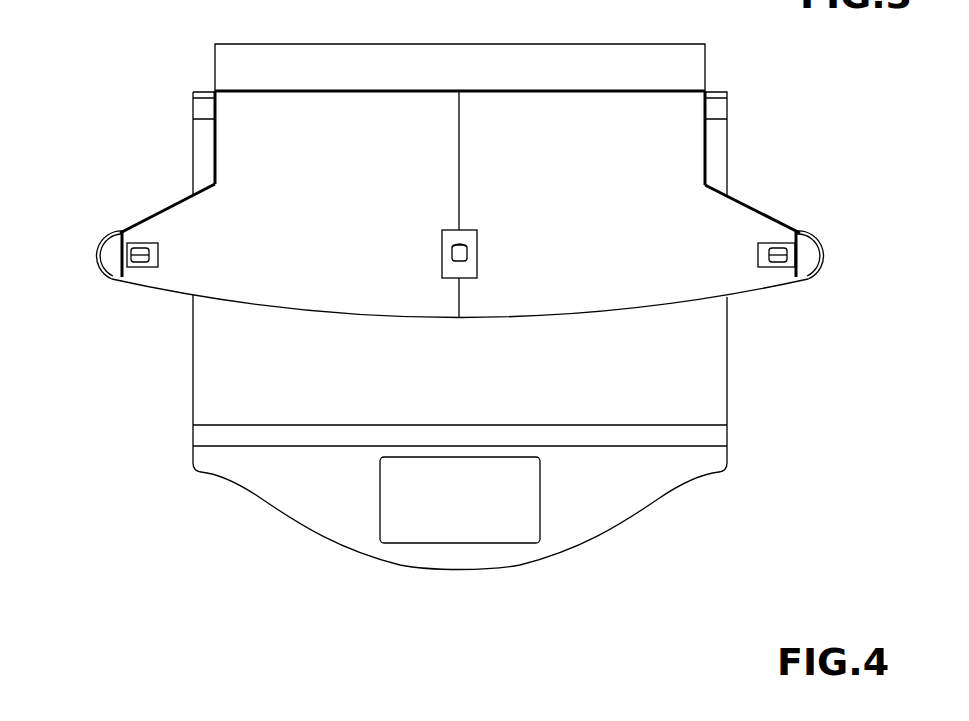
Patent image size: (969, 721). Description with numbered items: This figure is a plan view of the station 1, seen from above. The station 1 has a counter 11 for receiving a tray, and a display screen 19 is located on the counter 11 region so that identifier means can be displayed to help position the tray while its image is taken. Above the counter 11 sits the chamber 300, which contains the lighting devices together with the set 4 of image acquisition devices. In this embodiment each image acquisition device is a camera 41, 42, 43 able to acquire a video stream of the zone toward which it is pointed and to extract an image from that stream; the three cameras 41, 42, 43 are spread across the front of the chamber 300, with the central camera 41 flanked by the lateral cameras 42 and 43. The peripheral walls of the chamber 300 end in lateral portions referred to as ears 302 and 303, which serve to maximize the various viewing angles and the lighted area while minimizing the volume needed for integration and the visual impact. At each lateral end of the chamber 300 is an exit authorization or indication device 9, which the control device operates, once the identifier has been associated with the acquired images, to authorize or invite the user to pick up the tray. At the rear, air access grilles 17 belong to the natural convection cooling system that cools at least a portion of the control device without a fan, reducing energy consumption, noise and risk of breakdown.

The station 1 is at (828, 175).
The set of image acquisition devices 4 is at (513, 197).
The exit authorization or indication device 9 is at (92, 260).
The counter 11 is at (682, 400).
The air access grilles 17 is at (625, 67).
The display screen 19 is at (487, 535).
The camera 41 is at (450, 248).
The camera 42 is at (140, 258).
The camera 43 is at (785, 253).
The chamber 300 is at (768, 155).
The ear 302 is at (177, 220).
The ear 303 is at (752, 283).